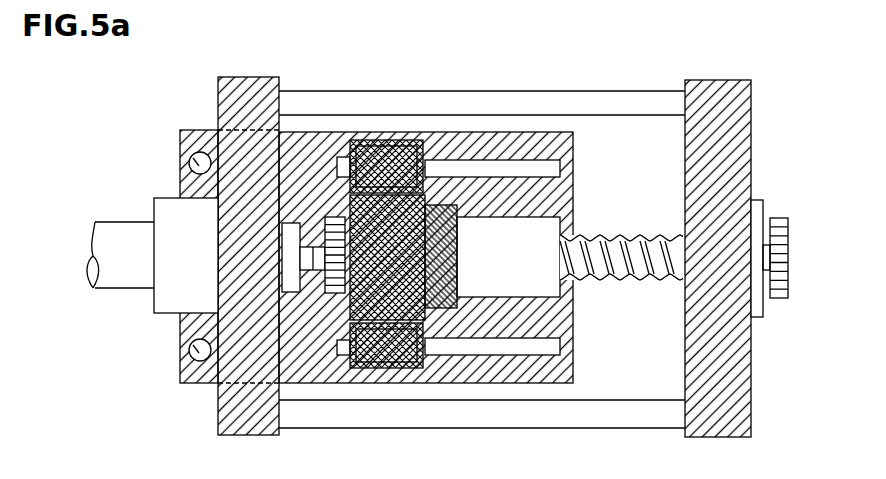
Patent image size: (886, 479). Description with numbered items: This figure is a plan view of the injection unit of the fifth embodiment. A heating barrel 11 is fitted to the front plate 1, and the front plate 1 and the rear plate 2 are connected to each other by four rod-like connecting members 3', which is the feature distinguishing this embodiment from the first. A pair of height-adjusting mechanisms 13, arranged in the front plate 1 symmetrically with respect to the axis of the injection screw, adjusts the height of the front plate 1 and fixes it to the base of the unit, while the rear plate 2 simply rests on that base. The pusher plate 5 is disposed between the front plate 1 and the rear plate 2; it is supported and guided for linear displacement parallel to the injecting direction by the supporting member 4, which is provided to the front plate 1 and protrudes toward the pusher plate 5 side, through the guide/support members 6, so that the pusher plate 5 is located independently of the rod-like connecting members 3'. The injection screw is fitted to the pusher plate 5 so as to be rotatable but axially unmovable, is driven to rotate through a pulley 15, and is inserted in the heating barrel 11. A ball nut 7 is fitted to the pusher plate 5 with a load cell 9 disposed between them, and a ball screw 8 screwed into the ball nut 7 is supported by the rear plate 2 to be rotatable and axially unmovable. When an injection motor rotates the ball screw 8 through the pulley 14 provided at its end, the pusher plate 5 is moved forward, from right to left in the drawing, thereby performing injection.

The front plate 1 is at (233, 436).
The rear plate 2 is at (713, 437).
The rod-like connecting members 3' is at (482, 221).
The supporting member 4 is at (523, 383).
The pusher plate 5 is at (373, 370).
The guide/support members 6 is at (472, 358).
The ball nut 7 is at (503, 225).
The ball screw 8 is at (619, 235).
The load cell 9 is at (457, 205).
The heating barrel 11 is at (125, 222).
The height-adjusting mechanisms 13 is at (193, 163).
The pulley 14 is at (778, 218).
The pulley 15 is at (327, 217).